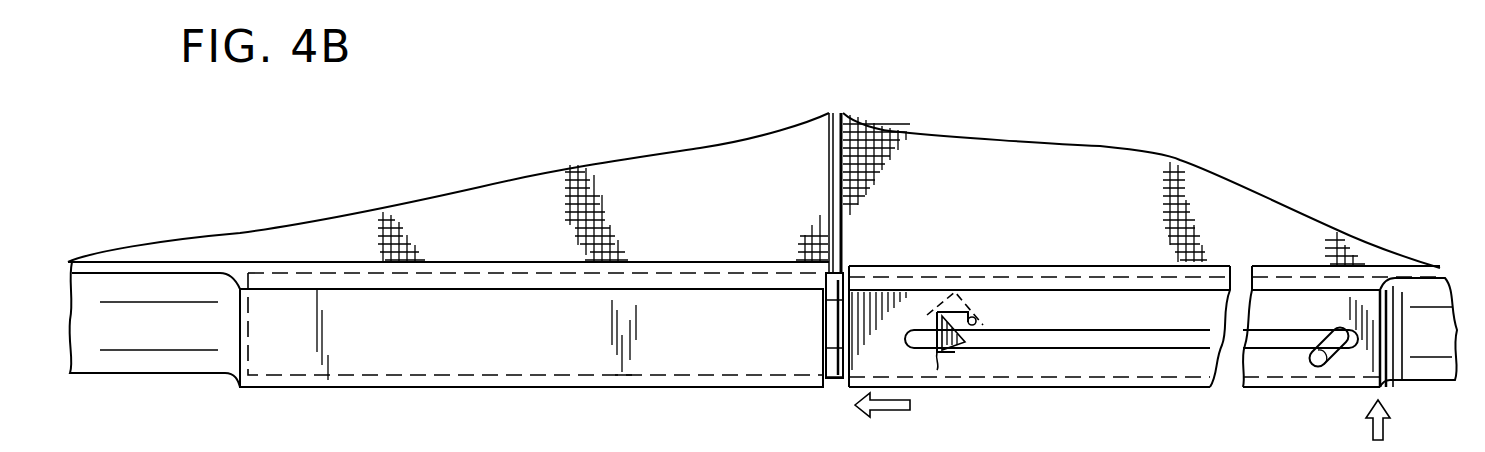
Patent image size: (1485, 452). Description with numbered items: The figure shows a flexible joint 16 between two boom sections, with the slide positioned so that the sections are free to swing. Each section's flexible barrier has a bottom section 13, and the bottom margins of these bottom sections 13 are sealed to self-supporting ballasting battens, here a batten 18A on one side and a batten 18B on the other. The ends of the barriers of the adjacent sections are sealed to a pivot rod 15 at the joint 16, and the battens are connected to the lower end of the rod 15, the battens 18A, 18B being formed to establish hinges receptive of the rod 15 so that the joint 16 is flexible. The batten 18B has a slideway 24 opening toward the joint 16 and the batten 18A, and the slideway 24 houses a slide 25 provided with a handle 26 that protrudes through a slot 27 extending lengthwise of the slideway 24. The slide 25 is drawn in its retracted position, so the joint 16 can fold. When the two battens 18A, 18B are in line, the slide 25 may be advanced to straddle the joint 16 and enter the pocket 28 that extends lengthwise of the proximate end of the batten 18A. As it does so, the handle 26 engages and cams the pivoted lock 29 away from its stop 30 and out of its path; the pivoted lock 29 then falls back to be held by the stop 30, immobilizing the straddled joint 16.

The bottom section 13 is at (583, 170).
The pivot rod 15 is at (838, 200).
The flexible joint 16 is at (850, 278).
The batten 18A is at (121, 362).
The batten 18B is at (1438, 367).
The slideway 24 is at (1150, 250).
The slide 25 is at (1118, 362).
The handle 26 is at (1310, 360).
The slot 27 is at (1058, 335).
The pocket 28 is at (528, 340).
The pivoted lock 29 is at (963, 340).
The stop 30 is at (948, 353).